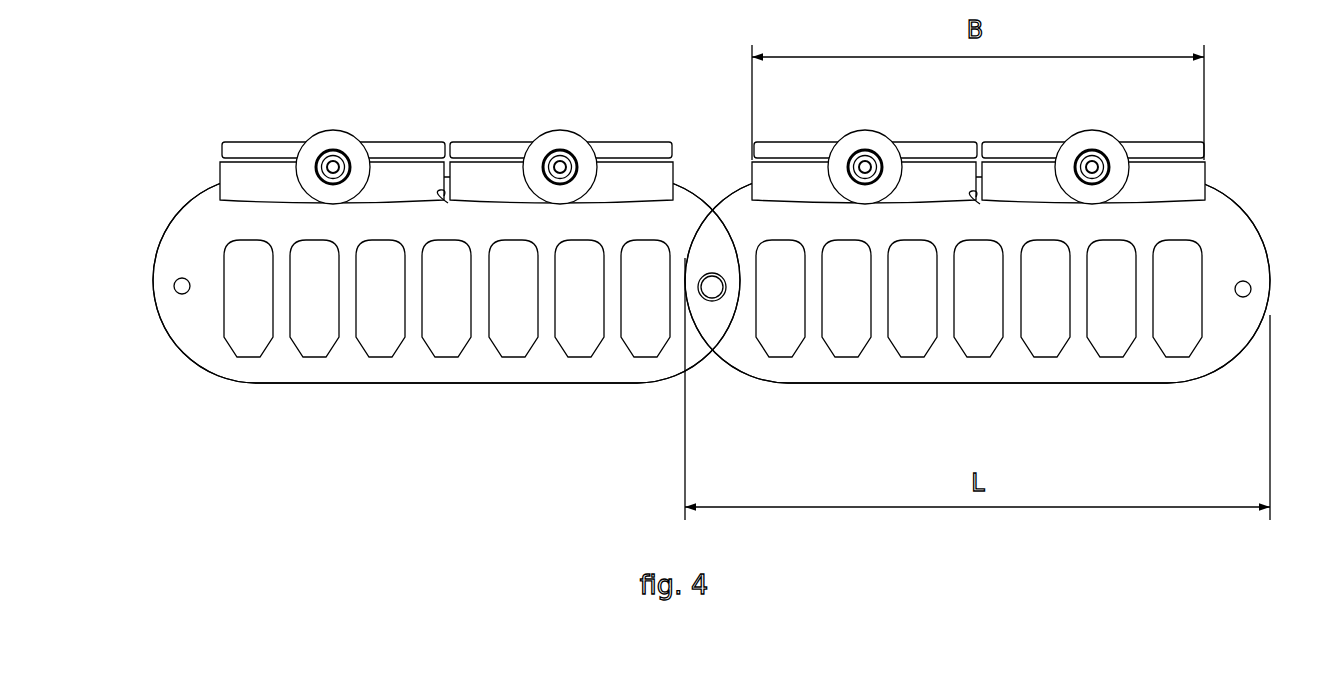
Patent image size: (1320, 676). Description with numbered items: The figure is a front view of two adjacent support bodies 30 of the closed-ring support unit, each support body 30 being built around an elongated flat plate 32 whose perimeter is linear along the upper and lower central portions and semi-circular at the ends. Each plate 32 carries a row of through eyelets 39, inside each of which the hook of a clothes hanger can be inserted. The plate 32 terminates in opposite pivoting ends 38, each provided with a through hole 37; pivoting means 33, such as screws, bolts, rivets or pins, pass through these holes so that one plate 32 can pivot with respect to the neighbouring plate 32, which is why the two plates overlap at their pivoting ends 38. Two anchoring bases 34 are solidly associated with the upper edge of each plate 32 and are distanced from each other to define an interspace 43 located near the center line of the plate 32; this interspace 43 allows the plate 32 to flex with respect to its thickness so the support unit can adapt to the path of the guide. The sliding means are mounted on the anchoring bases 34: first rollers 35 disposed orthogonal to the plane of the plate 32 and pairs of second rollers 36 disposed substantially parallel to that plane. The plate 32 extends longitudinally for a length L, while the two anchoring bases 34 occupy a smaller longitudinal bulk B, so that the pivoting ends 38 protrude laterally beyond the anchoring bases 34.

The support body 30 is at (445, 428).
The flat plate 32 is at (310, 387).
The pivoting means 33 is at (719, 300).
The anchoring base 34 is at (232, 173).
The first roller 35 is at (250, 150).
The second roller 36 is at (327, 140).
The through hole 37 is at (185, 283).
The pivoting end 38 is at (178, 238).
The through eyelet 39 is at (248, 341).
The interspace 43 is at (448, 203).